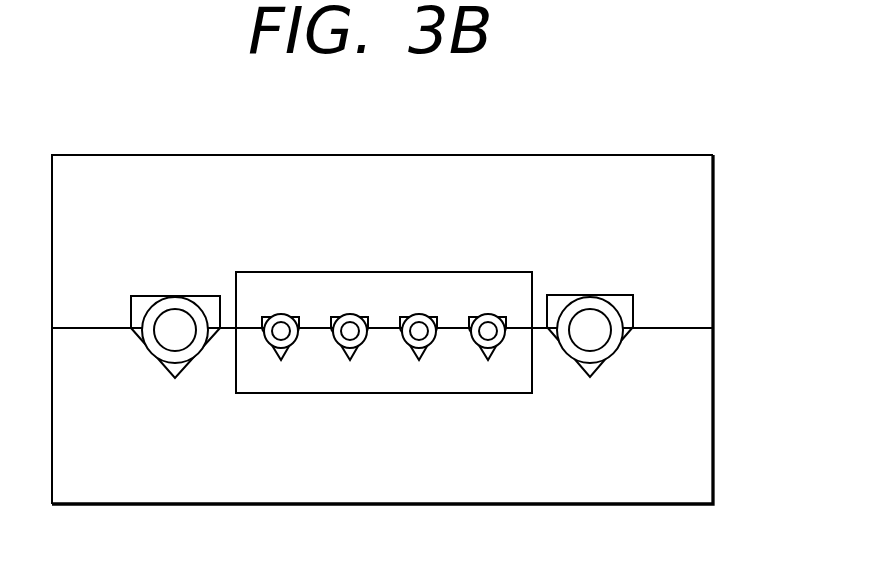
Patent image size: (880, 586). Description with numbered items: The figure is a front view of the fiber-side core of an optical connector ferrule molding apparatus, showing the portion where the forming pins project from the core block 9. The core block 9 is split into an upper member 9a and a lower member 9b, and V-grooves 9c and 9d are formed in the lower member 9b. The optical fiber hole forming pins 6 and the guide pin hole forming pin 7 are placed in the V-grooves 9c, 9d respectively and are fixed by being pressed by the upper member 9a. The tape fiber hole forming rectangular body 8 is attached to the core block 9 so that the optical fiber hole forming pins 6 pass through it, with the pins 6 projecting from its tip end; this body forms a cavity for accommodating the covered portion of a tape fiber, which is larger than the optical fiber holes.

The optical fiber hole forming pins 6 is at (419, 337).
The guide pin hole forming pin 7 is at (600, 333).
The tape fiber hole forming rectangular body 8 is at (419, 272).
The core block 9 is at (605, 294).
The upper member 9a is at (693, 207).
The lower member 9b is at (693, 405).
The V-groove 9c is at (490, 335).
The V-groove 9d is at (592, 362).